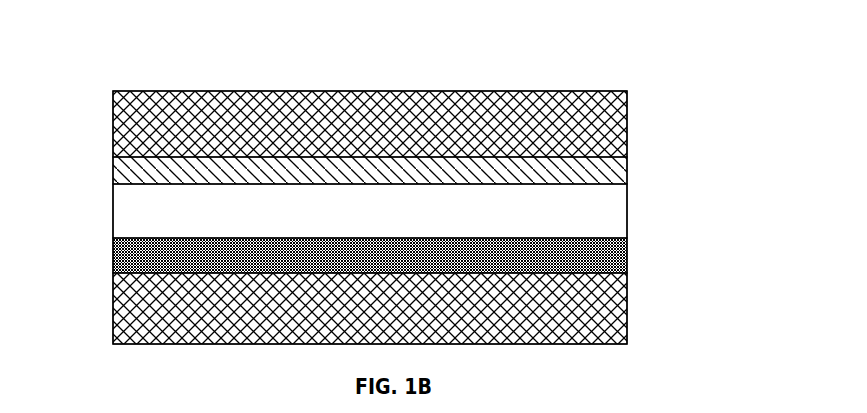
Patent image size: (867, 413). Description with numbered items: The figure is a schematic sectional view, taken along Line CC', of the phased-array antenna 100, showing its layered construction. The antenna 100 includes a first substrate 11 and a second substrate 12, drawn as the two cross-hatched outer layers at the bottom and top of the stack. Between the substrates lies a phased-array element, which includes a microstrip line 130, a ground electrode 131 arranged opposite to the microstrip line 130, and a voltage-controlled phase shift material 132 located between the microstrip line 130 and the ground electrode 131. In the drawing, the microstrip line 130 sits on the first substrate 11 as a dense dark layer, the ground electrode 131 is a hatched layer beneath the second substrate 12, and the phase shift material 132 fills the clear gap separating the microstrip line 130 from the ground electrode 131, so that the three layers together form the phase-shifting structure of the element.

The phased-array antenna 100 is at (92, 63).
The second substrate 12 is at (627, 127).
The ground electrode 131 is at (627, 169).
The voltage-controlled phase shift material 132 is at (627, 215).
The microstrip line 130 is at (627, 259).
The first substrate 11 is at (627, 307).